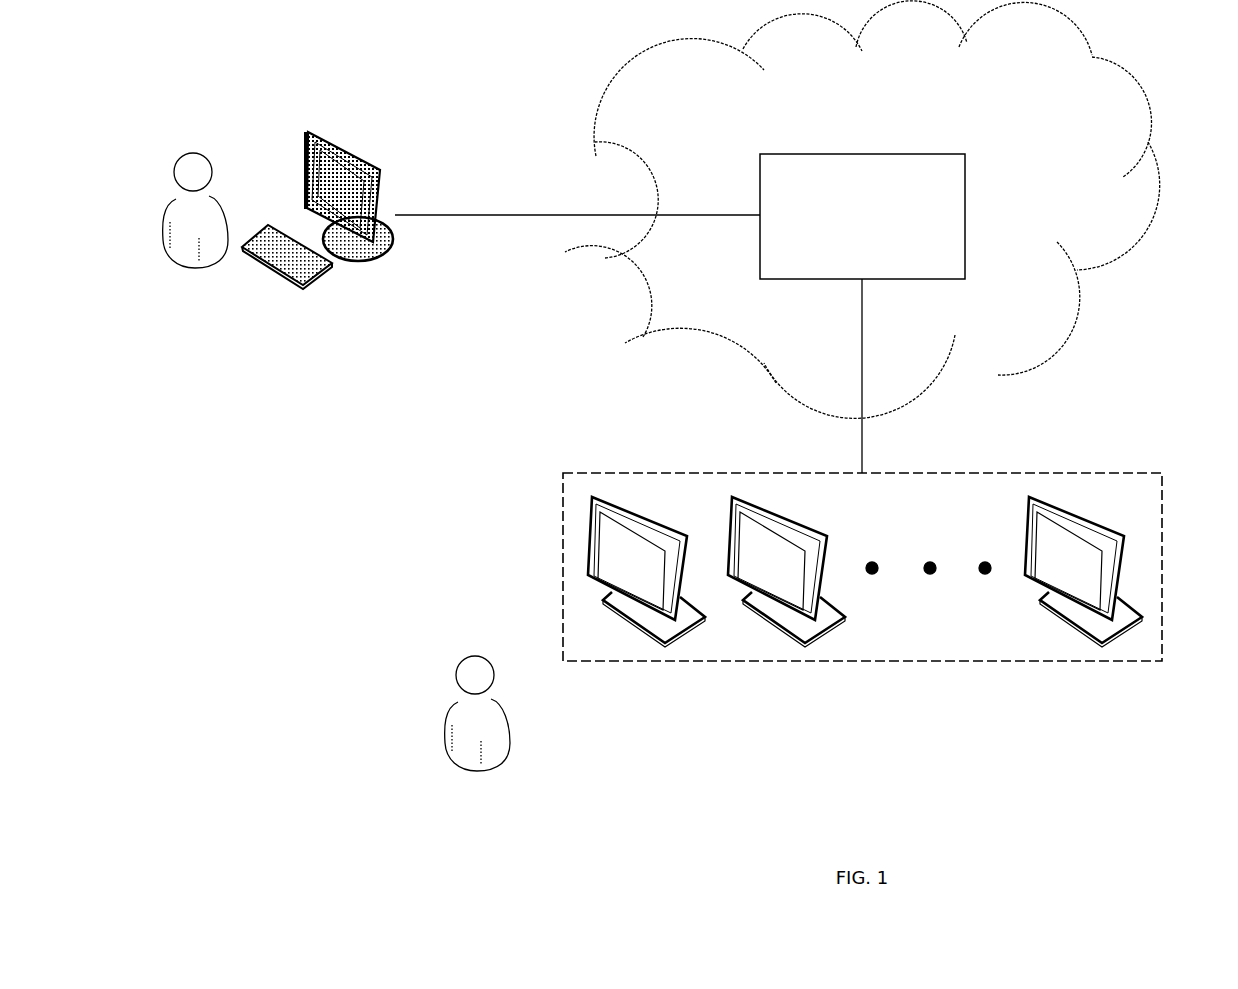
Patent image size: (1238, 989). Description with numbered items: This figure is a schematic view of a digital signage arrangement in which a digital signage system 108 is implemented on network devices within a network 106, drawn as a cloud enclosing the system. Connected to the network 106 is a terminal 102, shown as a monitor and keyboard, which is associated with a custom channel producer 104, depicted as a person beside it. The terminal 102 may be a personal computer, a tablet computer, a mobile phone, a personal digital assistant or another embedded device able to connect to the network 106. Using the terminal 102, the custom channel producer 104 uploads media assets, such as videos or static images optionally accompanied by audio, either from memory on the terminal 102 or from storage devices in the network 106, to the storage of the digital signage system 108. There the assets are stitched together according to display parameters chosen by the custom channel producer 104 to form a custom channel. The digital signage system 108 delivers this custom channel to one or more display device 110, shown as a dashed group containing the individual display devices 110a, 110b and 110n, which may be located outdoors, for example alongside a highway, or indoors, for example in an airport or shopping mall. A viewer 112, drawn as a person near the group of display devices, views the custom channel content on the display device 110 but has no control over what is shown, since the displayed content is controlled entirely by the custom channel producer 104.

The terminal 102 is at (396, 248).
The custom channel producer 104 is at (190, 150).
The network 106 is at (1133, 79).
The digital signage system 108 is at (883, 153).
The display device 110 is at (862, 556).
The display device 110a is at (665, 641).
The display device 110b is at (805, 641).
The display device 110n is at (1108, 641).
The viewer 112 is at (447, 710).